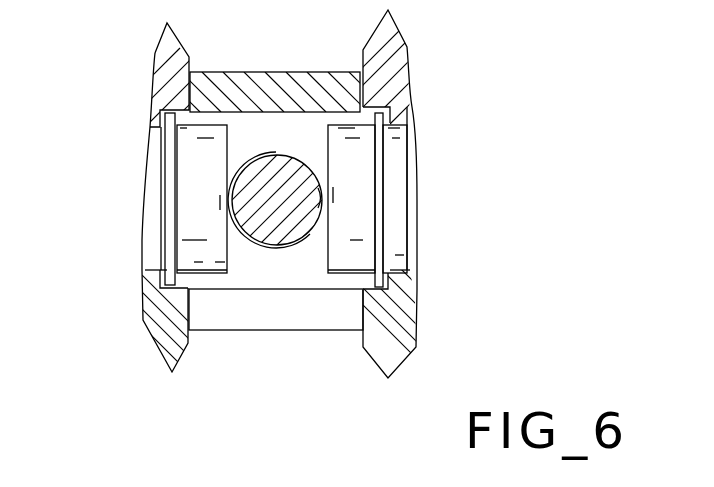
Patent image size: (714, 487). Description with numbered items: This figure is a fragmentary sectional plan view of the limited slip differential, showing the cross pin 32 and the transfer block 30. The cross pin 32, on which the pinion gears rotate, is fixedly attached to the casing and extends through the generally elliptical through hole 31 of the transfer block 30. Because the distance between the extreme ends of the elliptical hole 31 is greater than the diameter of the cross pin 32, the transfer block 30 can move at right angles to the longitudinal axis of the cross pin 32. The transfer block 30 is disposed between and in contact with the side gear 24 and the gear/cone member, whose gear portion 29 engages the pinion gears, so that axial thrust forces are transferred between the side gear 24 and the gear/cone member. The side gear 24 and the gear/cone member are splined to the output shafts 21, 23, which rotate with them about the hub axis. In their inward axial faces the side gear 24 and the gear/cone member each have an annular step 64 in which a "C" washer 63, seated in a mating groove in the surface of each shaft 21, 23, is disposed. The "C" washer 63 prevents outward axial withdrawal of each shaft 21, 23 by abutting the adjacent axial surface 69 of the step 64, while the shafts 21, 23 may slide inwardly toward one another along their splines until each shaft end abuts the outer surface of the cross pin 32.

The output shaft 21 is at (158, 206).
The output shaft 23 is at (403, 197).
The side gear 24 is at (157, 72).
The gear portion 29 is at (398, 67).
The transfer block 30 is at (267, 77).
The elliptical through hole 31 is at (318, 197).
The cross pin 32 is at (276, 152).
The "C" washer 63 is at (170, 174).
The annular step 64 is at (361, 277).
The axial surface 69 is at (172, 266).